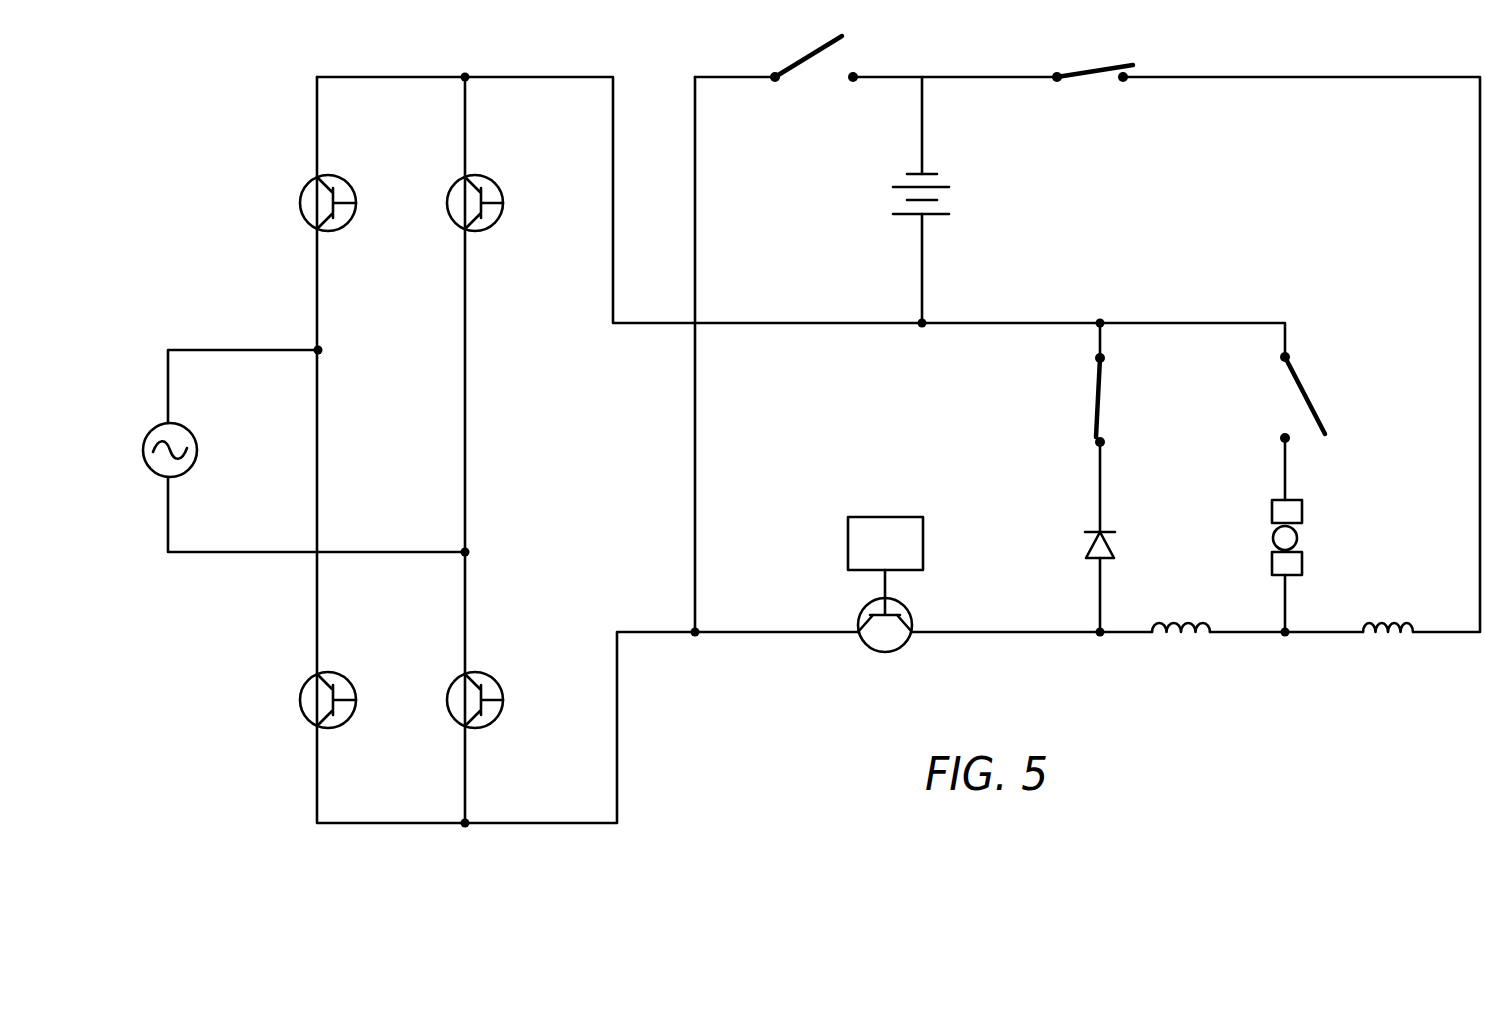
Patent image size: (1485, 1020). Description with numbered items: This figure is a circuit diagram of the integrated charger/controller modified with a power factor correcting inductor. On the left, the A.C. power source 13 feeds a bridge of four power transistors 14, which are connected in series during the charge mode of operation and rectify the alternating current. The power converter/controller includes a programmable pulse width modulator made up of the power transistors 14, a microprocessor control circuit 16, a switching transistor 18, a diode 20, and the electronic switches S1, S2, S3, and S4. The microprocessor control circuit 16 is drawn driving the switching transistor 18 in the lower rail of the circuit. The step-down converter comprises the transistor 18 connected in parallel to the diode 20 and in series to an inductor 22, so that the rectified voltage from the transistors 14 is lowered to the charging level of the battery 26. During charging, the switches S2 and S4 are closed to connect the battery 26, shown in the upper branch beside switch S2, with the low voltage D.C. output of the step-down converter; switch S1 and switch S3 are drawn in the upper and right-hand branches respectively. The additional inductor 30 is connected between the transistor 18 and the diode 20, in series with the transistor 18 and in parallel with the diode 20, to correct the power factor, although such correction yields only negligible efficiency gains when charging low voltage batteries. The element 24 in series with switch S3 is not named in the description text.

The A.C. power source 13 is at (176, 422).
The power transistors 14 is at (447, 218).
The microprocessor control circuit 16 is at (888, 517).
The switching transistor 18 is at (880, 652).
The diode 20 is at (1088, 546).
The inductor 22 is at (1385, 638).
The load device 24 is at (1298, 540).
The battery 26 is at (945, 183).
The inductor 30 is at (1165, 638).
The electronic switch S1 is at (814, 76).
The electronic switch S2 is at (1092, 94).
The electronic switch S3 is at (1280, 397).
The electronic switch S4 is at (1072, 385).